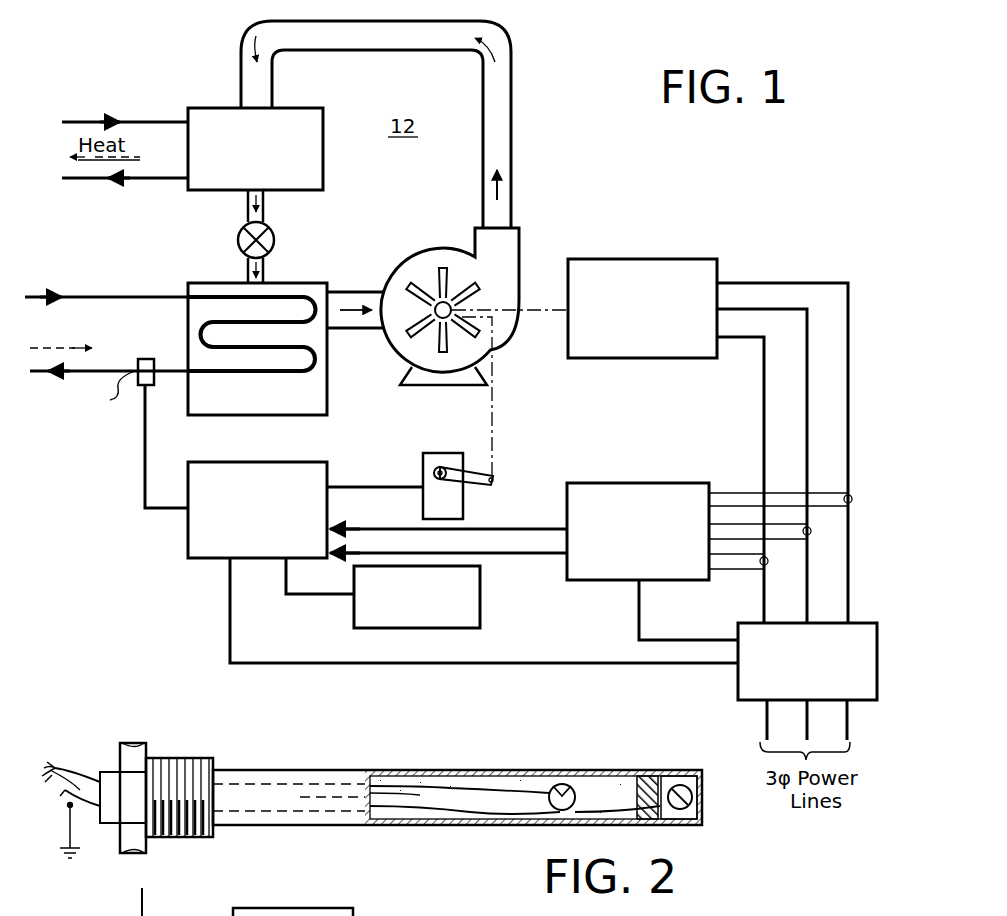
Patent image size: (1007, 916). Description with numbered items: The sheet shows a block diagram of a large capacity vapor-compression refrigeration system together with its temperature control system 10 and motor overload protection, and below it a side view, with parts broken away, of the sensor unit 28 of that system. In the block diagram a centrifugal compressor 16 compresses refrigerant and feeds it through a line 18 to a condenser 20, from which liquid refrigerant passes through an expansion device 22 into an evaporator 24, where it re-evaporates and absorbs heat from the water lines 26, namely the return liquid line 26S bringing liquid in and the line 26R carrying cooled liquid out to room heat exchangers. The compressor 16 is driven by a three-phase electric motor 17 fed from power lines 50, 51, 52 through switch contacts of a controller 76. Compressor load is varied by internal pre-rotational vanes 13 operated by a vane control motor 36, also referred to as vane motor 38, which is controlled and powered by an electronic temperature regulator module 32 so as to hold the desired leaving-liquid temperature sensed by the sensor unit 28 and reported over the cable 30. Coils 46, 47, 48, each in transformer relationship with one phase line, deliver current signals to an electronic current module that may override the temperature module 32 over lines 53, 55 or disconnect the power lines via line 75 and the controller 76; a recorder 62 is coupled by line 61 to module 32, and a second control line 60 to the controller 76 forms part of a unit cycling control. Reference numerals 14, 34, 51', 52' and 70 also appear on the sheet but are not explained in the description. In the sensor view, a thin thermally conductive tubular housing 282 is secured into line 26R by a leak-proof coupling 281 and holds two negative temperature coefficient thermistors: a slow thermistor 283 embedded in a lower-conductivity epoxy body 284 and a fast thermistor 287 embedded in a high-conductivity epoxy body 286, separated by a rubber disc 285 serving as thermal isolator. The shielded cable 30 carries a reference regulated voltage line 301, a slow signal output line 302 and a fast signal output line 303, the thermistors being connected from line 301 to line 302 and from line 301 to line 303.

In FIG. 1, the temperature control system 10 is at (168, 566).
In FIG. 1, the pre-rotational vanes 13 is at (410, 286).
In FIG. 1, the control system 14 is at (590, 483).
In FIG. 1, the centrifugal compressor 16 is at (390, 346).
In FIG. 1, the three-phase electric motor 17 is at (690, 358).
In FIG. 1, the line 18 is at (511, 122).
In FIG. 1, the condenser unit 20 is at (318, 108).
In FIG. 1, the expansion device 22 is at (275, 240).
In FIG. 1, the evaporator 24 is at (320, 415).
In FIG. 1, the water lines 26 is at (125, 370).
In FIG. 1, the return liquid line 26S is at (105, 296).
In FIG. 1, the liquid leaving line 26R is at (173, 374).
In FIG. 1, the temperature sensor unit 28 is at (140, 386).
In FIG. 2, the temperature sensor unit 28 is at (395, 792).
In FIG. 1, the three conductor cable 30 is at (165, 509).
In FIG. 2, the three conductor cable 30 is at (85, 775).
In FIG. 1, the electronic temperature regulator module 32 is at (236, 462).
In FIG. 1, the vane motor control line 34 is at (388, 487).
In FIG. 1, the vane control motor 36 is at (485, 485).
In FIG. 1, the vane motor 38 is at (494, 396).
In FIG. 1, the coil 46 is at (855, 500).
In FIG. 1, the coil 47 is at (812, 531).
In FIG. 1, the coil 48 is at (770, 562).
In FIG. 1, the three-phase power line 50 is at (851, 315).
In FIG. 1, the three-phase power line 51 is at (781, 524).
In FIG. 1, the three-phase power line 52 is at (756, 538).
In FIG. 1, the power line 51' is at (827, 730).
In FIG. 1, the power line 52' is at (743, 730).
In FIG. 1, the line 53 is at (370, 528).
In FIG. 1, the line 55 is at (505, 554).
In FIG. 1, the second control line 60 is at (634, 663).
In FIG. 1, the line 61 is at (308, 596).
In FIG. 1, the recorder 62 is at (350, 628).
In FIG. 1, the line 75 is at (638, 603).
In FIG. 1, the controller 76 is at (738, 631).
In FIG. 2, the module 70 is at (265, 908).
In FIG. 2, the leak-proof coupling 281 is at (184, 758).
In FIG. 2, the tubular housing 282 is at (340, 770).
In FIG. 2, the thermistor 283 is at (568, 768).
In FIG. 2, the epoxy body 284 is at (496, 770).
In FIG. 2, the rubber disc 285 is at (650, 770).
In FIG. 2, the epoxy body 286 is at (684, 822).
In FIG. 2, the thermistor 287 is at (698, 800).
In FIG. 2, the reference regulated voltage line 301 is at (432, 770).
In FIG. 2, the slow signal output line 302 is at (512, 825).
In FIG. 2, the fast signal output line 303 is at (600, 818).